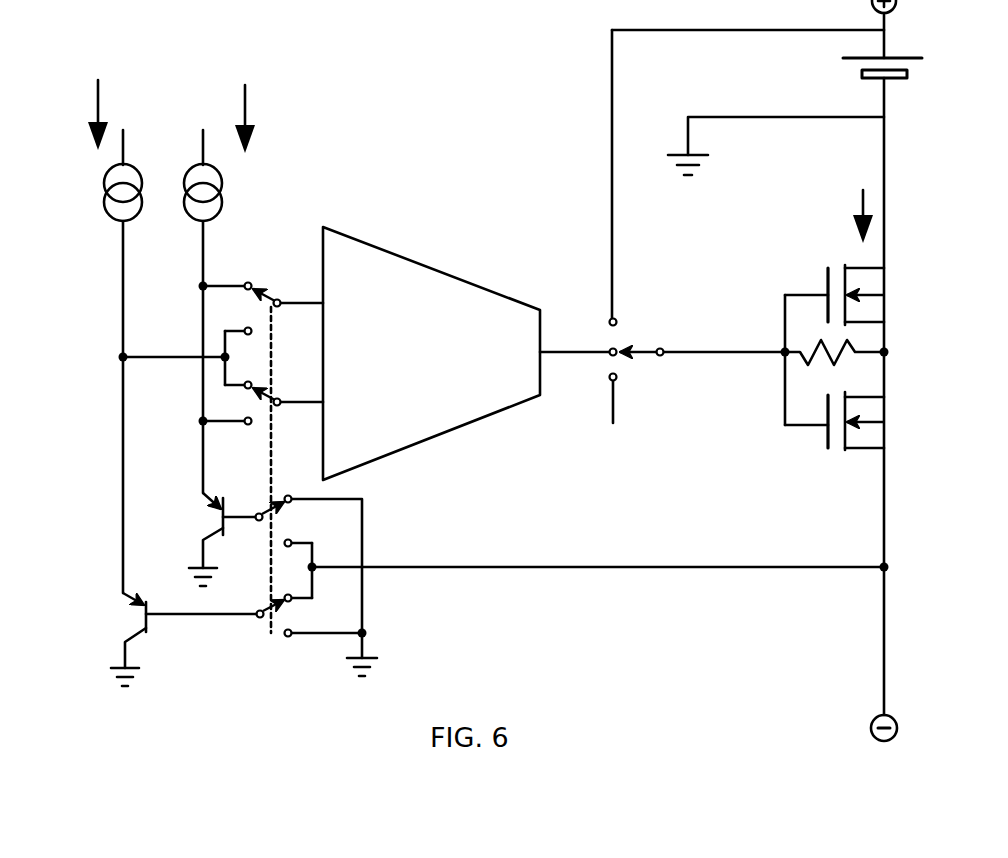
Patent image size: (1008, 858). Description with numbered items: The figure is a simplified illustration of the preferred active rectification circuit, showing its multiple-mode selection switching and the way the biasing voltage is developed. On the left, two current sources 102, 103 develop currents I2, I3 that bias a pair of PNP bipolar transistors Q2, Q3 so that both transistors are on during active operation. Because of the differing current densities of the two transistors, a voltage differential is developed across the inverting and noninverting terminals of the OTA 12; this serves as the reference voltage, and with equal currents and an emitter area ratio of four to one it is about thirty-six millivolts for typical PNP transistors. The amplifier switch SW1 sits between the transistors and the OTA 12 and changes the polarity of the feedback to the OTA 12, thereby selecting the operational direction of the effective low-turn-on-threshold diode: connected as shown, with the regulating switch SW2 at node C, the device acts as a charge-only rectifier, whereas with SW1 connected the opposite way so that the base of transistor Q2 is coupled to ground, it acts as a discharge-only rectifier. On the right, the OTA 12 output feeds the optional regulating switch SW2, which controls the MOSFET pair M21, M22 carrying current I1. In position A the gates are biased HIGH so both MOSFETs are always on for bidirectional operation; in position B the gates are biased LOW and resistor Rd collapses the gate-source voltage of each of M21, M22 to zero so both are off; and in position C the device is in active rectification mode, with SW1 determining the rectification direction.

The current source 102 is at (97, 361).
The current source 103 is at (229, 311).
The OTA 12 is at (466, 353).
The amplifier switch SW1 is at (268, 268).
The regulating switch SW2 is at (645, 328).
The transistor Q2 is at (164, 628).
The transistor Q3 is at (205, 532).
The MOSFET M21 is at (835, 259).
The MOSFET M22 is at (822, 431).
The resistor Rd is at (825, 345).
The current I1 is at (851, 214).
The current I2 is at (85, 115).
The current I3 is at (232, 119).
The switch position A is at (607, 322).
The switch position B is at (619, 377).
The switch position C is at (607, 356).